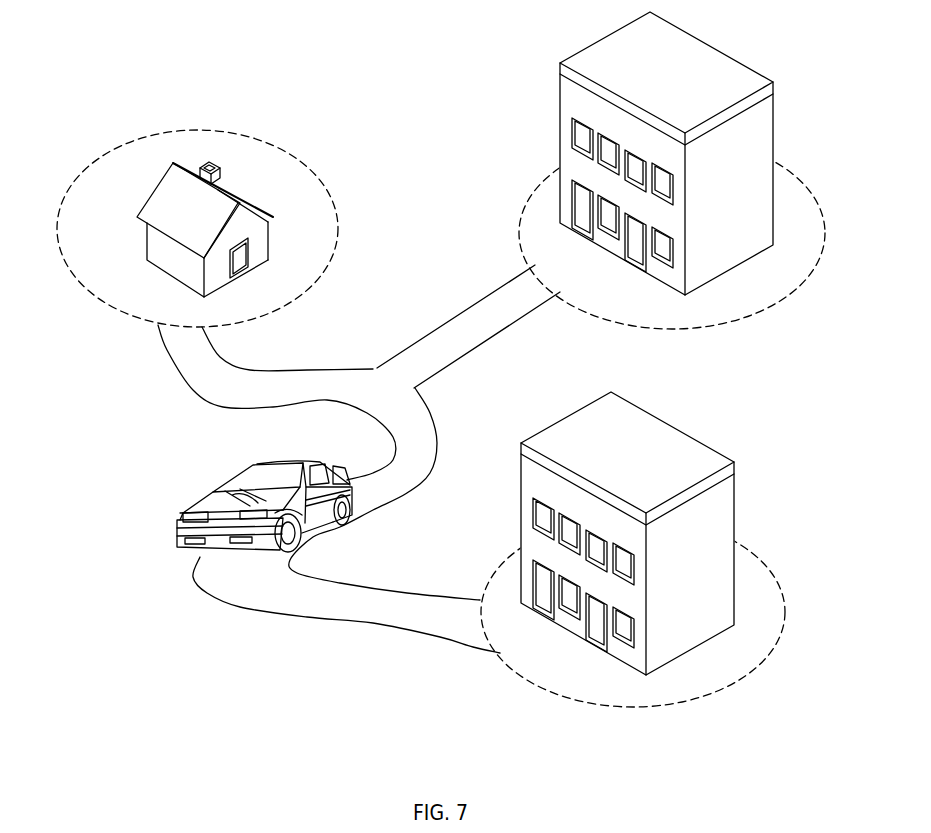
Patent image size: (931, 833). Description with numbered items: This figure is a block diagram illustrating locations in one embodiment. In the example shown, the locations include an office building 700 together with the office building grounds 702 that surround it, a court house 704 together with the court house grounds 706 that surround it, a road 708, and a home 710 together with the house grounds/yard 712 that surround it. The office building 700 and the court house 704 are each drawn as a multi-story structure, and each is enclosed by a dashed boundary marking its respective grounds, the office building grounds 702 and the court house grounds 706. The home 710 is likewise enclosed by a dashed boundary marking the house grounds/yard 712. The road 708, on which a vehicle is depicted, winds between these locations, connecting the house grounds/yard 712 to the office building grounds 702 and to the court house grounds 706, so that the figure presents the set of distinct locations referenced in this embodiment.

The office building 700 is at (632, 45).
The office building grounds 702 is at (540, 200).
The court house 704 is at (597, 422).
The court house grounds 706 is at (505, 580).
The road 708 is at (253, 480).
The home 710 is at (167, 200).
The house grounds/yard 712 is at (197, 129).